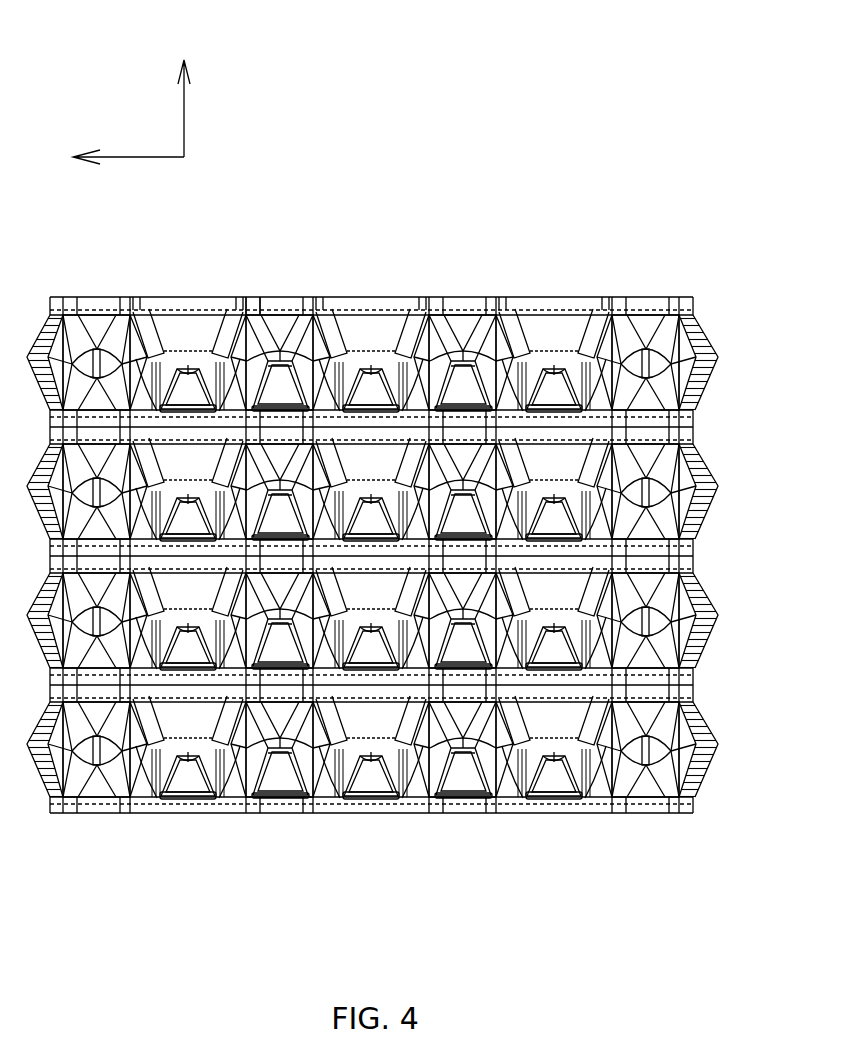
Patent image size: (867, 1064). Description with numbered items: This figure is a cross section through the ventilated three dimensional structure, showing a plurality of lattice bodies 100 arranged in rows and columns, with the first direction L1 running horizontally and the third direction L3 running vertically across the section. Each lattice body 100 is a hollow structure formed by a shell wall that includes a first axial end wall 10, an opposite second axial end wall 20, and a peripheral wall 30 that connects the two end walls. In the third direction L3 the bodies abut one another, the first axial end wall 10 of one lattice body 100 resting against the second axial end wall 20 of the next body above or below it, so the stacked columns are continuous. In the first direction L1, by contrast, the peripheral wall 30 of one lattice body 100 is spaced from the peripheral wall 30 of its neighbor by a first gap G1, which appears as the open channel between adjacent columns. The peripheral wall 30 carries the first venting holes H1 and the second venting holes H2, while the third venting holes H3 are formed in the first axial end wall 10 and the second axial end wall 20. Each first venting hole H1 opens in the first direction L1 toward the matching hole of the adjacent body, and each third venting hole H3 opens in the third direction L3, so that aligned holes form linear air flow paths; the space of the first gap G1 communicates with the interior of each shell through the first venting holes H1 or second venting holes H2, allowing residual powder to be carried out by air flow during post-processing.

The lattice body 100 is at (458, 323).
The first axial end wall 10 is at (505, 297).
The second axial end wall 20 is at (422, 432).
The peripheral wall 30 is at (532, 357).
The first gap G1 is at (558, 363).
The first venting hole H1 is at (230, 335).
The second venting hole H2 is at (278, 397).
The third venting hole H3 is at (263, 307).
The first direction L1 is at (107, 155).
The third direction L3 is at (182, 89).